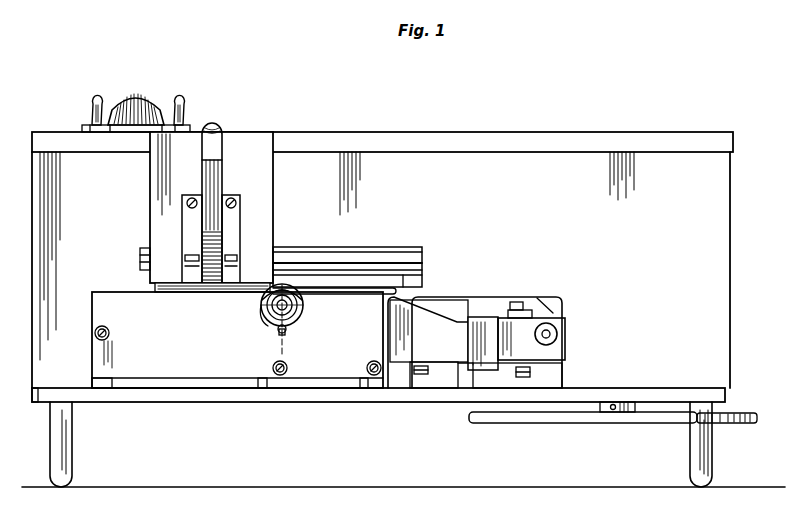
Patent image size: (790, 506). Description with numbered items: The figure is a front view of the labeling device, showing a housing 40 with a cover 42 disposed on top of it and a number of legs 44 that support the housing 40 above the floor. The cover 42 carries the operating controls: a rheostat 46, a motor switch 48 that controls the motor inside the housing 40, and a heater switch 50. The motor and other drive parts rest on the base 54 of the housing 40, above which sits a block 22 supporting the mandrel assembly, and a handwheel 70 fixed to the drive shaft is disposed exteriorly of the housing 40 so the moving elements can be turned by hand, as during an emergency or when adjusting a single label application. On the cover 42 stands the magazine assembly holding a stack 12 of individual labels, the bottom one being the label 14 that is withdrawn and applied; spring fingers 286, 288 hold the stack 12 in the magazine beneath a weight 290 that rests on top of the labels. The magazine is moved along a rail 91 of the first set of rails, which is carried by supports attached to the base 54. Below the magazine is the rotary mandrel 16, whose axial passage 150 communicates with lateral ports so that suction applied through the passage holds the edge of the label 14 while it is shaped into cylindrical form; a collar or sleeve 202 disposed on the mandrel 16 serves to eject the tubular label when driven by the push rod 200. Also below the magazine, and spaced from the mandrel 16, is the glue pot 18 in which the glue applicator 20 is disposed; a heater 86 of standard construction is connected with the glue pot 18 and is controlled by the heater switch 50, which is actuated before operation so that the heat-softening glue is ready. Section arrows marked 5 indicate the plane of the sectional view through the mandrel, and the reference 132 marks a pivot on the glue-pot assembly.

The section line 5- 5 is at (262, 263).
The stack 12 is at (230, 222).
The label 14 is at (218, 294).
The rotary mandrel 16 is at (302, 306).
The glue pot 18 is at (566, 345).
The glue applicator 20 is at (497, 315).
The base block 22 is at (185, 372).
The housing 40 is at (724, 170).
The cover 42 is at (527, 132).
The legs 44 is at (68, 458).
The rheostat 46 is at (131, 98).
The motor switch 48 is at (184, 100).
The heater switch 50 is at (93, 106).
The base 54 is at (386, 396).
The handwheel 70 is at (580, 416).
The heater 86 is at (506, 363).
The rail 91 is at (346, 264).
The pivot 132 is at (557, 330).
The axial passage 150 is at (266, 312).
The push rod 200 is at (290, 368).
The collar or sleeve 202 is at (290, 322).
The spring finger 286 is at (241, 249).
The spring finger 288 is at (192, 231).
The weight 290 is at (216, 184).